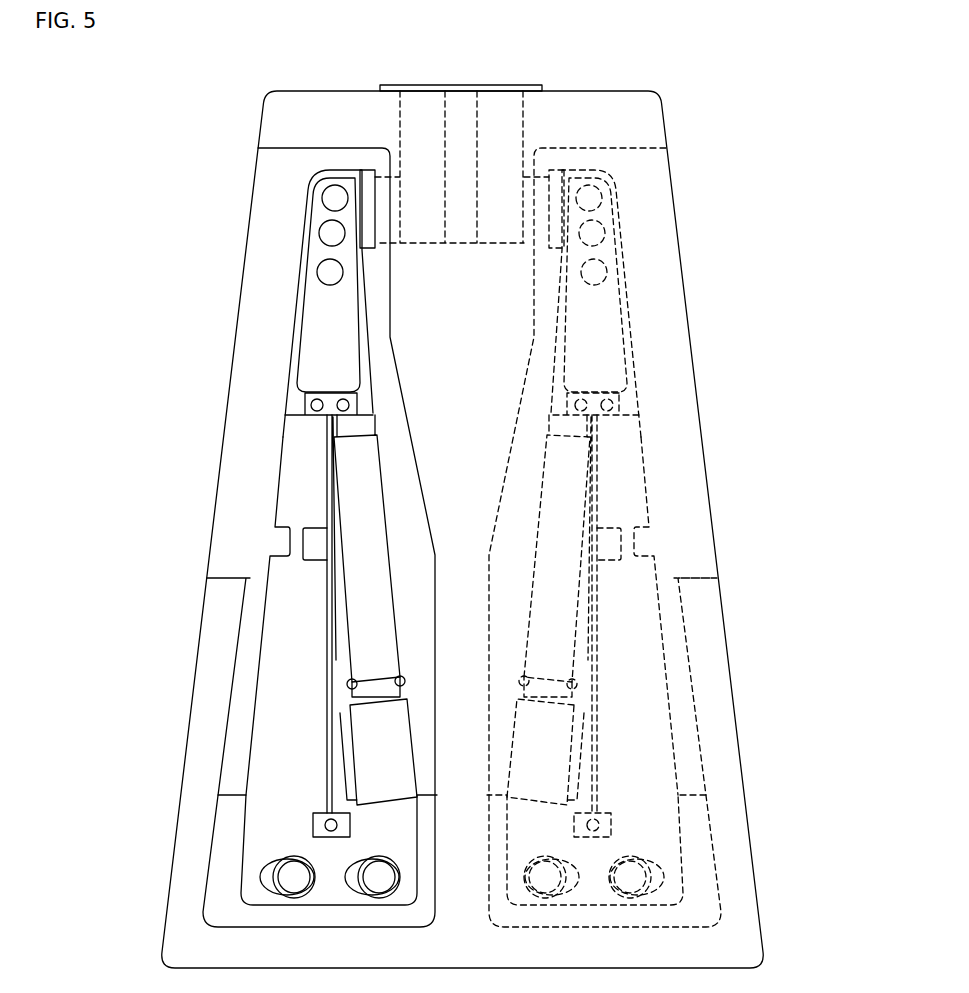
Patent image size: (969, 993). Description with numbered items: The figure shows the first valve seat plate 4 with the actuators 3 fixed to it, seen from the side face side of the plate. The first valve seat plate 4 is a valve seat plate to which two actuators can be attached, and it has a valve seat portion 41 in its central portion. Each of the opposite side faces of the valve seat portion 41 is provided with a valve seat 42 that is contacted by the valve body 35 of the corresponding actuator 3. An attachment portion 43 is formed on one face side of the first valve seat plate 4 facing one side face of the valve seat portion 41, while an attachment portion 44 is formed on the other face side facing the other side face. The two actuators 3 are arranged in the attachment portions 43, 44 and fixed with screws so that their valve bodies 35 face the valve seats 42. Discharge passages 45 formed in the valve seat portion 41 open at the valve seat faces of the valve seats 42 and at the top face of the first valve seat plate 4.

The actuator 3 is at (273, 645).
The first valve seat plate 4 is at (720, 554).
The valve body 35 is at (368, 215).
The valve seat portion 41 is at (495, 327).
The valve seat 42 is at (385, 193).
The attachment portion 43 is at (247, 445).
The attachment portion 44 is at (681, 432).
The discharge passage 45 is at (420, 132).